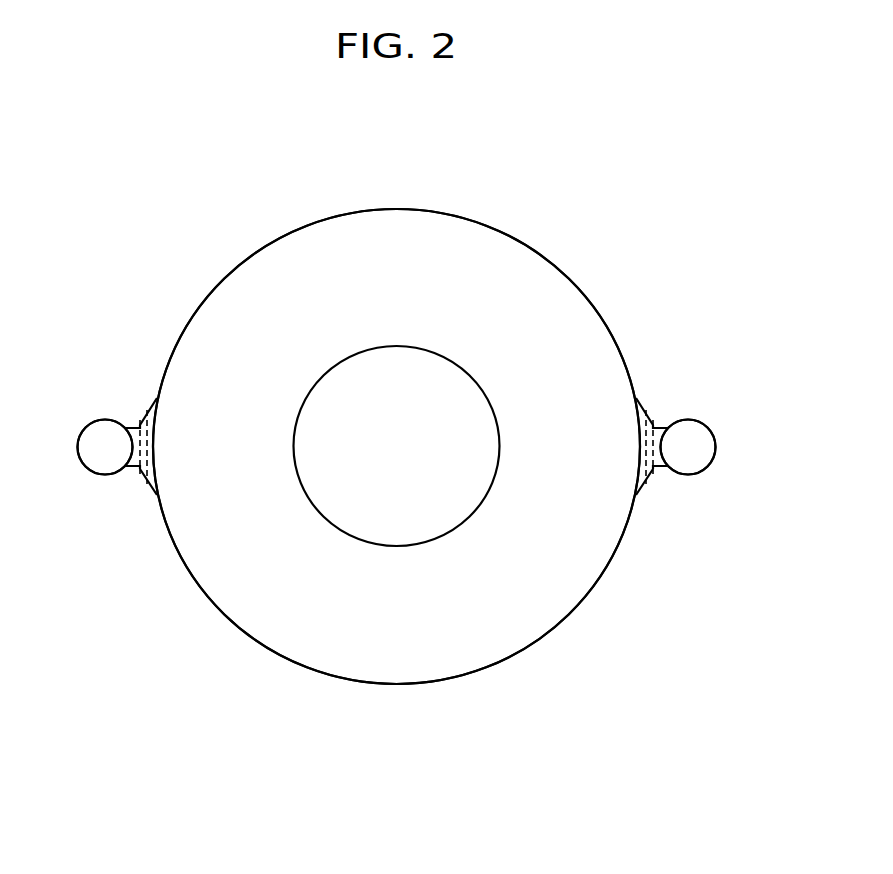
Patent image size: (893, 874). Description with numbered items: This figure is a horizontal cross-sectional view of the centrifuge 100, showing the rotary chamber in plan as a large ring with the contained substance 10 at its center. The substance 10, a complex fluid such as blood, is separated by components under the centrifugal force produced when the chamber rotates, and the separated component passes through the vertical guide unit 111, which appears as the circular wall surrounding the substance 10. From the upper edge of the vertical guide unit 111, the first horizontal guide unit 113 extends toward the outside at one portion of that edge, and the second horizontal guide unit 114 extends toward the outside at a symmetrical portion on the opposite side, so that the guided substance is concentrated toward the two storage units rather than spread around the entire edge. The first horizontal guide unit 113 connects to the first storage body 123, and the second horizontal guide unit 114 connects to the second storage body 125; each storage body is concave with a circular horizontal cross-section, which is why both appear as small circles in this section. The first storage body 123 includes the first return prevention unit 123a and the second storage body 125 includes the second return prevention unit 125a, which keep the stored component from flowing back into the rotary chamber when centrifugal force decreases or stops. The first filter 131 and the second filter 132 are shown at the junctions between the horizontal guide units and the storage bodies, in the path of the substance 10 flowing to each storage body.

The centrifuge 100 is at (632, 221).
The substance 10 is at (410, 482).
The vertical guide unit 111 is at (502, 632).
The first horizontal guide unit 113 is at (150, 494).
The second horizontal guide unit 114 is at (642, 494).
The first storage body 123 is at (88, 473).
The first return prevention unit 123a is at (105, 445).
The second storage body 125 is at (703, 470).
The second return prevention unit 125a is at (688, 443).
The first filter 131 is at (138, 430).
The second filter 132 is at (655, 428).